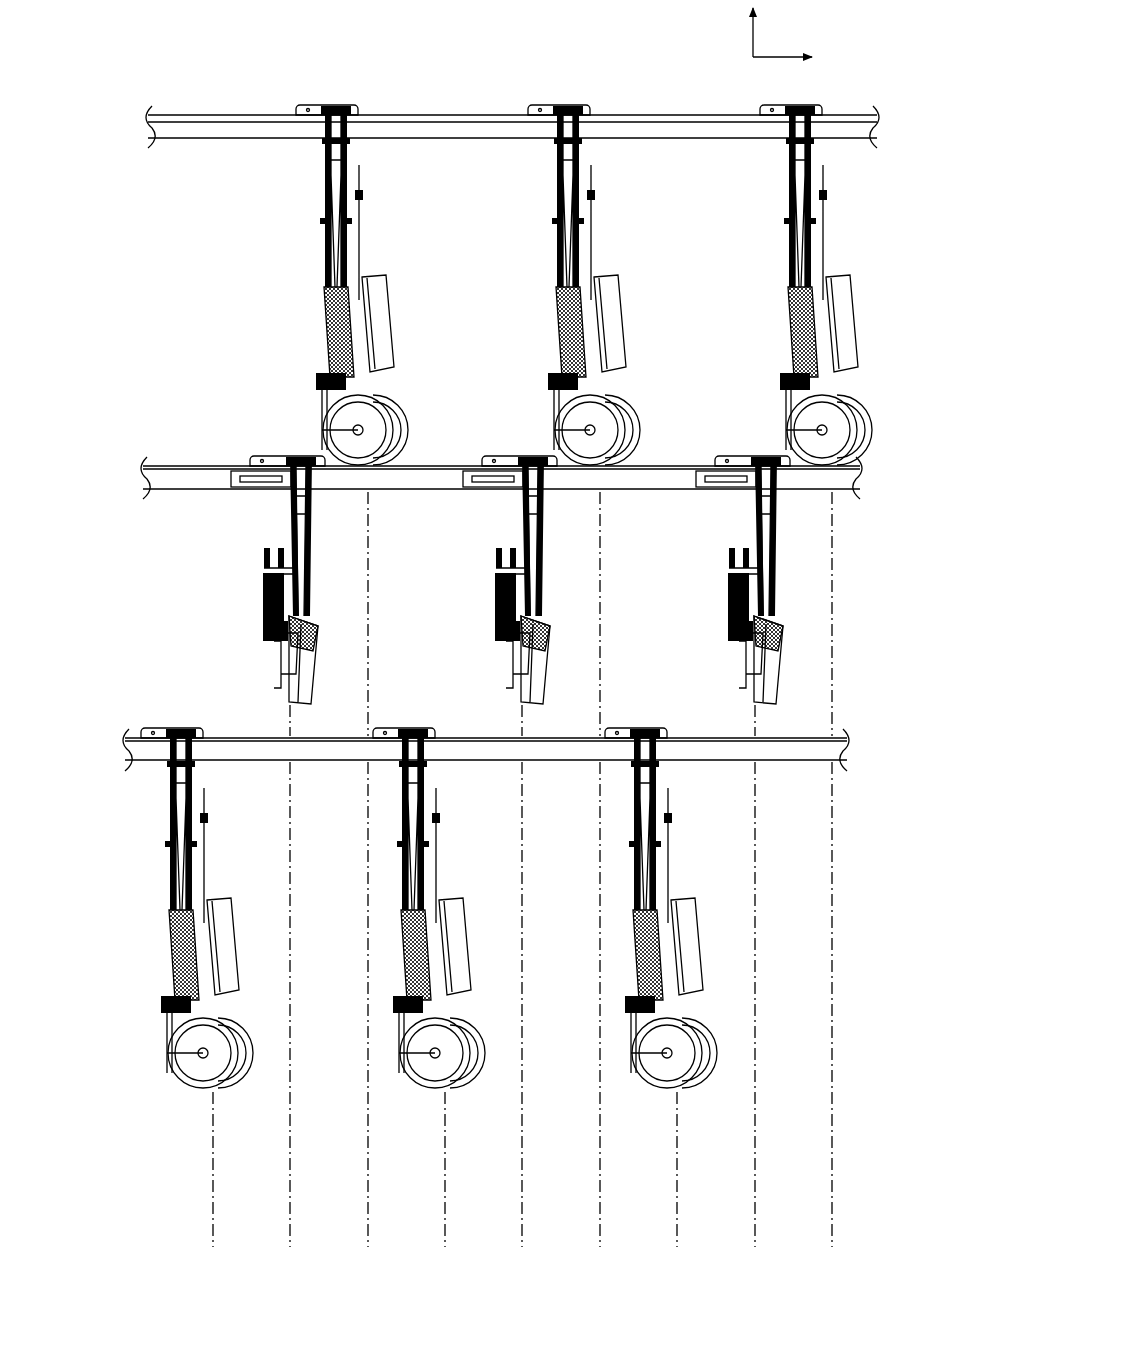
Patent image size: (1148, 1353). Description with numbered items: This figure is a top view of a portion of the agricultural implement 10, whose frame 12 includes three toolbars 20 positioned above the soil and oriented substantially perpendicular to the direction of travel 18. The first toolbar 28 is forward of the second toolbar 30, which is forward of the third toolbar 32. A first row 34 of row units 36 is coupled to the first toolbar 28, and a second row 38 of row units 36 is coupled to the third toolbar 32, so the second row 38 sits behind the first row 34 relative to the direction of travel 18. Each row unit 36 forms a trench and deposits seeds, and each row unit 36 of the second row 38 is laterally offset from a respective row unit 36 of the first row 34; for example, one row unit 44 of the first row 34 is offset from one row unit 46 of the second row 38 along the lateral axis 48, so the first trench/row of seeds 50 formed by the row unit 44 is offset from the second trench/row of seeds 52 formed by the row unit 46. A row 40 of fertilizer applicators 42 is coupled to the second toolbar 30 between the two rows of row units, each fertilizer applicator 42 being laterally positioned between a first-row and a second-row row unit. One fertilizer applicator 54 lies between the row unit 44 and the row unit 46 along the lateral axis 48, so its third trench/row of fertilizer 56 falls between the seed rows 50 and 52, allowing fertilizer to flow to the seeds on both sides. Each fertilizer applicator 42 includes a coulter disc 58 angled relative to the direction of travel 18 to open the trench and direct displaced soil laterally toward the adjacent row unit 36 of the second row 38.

The agricultural implement 10 is at (133, 205).
The frame 12 is at (268, 88).
The direction of travel 18 is at (752, 33).
The toolbars 20 is at (209, 130).
The first toolbar 28 is at (198, 472).
The second toolbar 30 is at (810, 755).
The third toolbar 32 is at (486, 749).
The first row 34 is at (272, 352).
The row unit 36 is at (535, 306).
The second row 38 is at (130, 897).
The row of fertilizer applicators 40 is at (125, 595).
The fertilizer applicator 42 is at (478, 603).
The row unit of the first row 44 is at (782, 313).
The row unit of the second row 46 is at (618, 887).
The lateral axis 48 is at (777, 55).
The first trench/row of seeds 50 is at (831, 1113).
The second trench/row of seeds 52 is at (677, 1175).
The fertilizer applicator 54 is at (712, 604).
The third trench/row of fertilizer 56 is at (755, 1213).
The coulter disc 58 is at (290, 660).